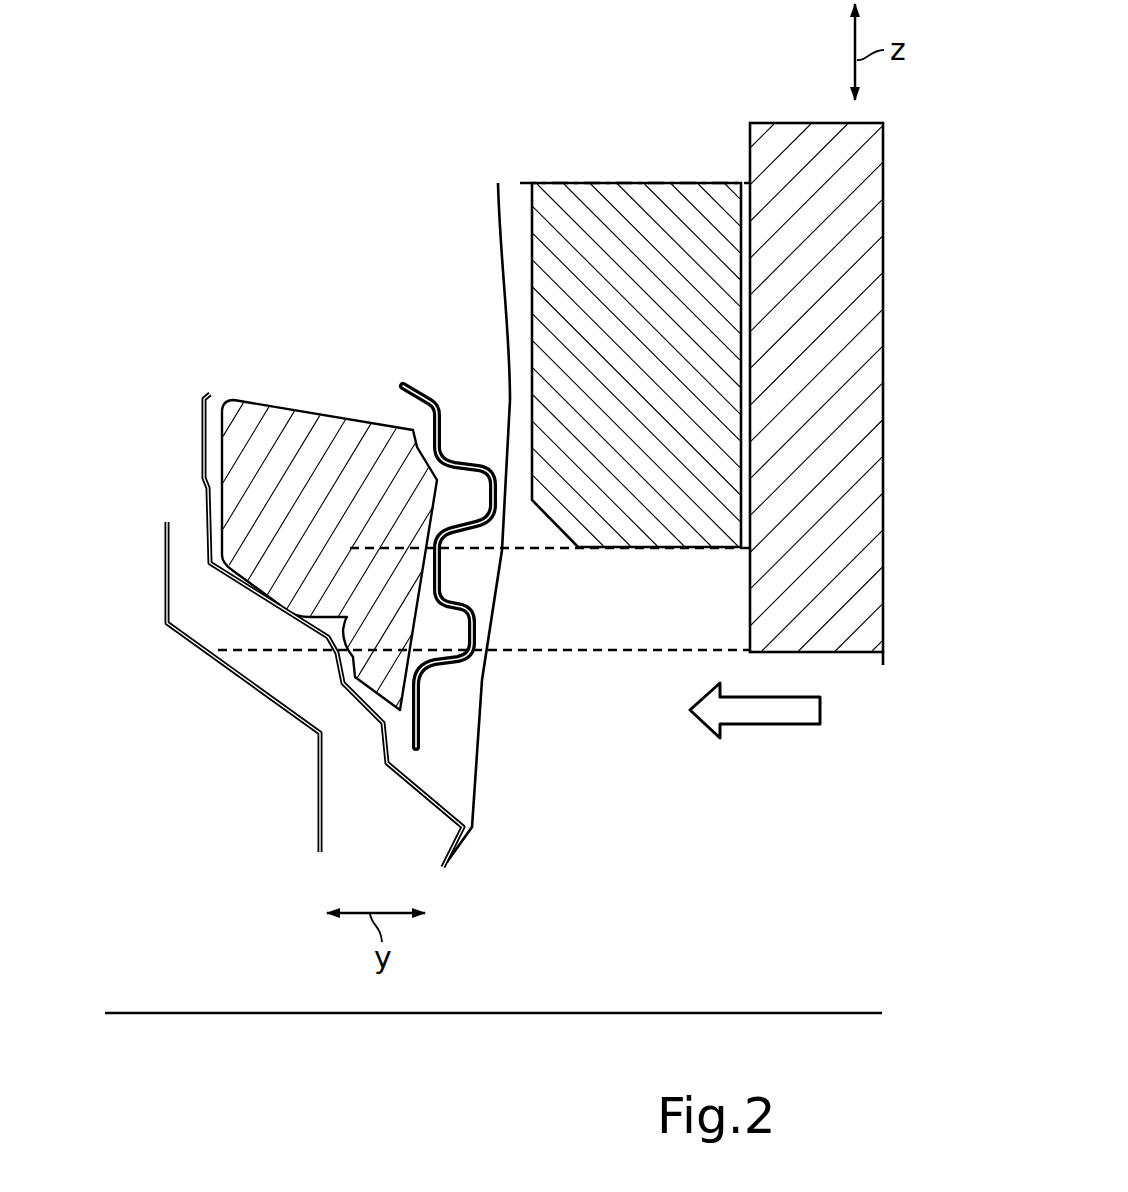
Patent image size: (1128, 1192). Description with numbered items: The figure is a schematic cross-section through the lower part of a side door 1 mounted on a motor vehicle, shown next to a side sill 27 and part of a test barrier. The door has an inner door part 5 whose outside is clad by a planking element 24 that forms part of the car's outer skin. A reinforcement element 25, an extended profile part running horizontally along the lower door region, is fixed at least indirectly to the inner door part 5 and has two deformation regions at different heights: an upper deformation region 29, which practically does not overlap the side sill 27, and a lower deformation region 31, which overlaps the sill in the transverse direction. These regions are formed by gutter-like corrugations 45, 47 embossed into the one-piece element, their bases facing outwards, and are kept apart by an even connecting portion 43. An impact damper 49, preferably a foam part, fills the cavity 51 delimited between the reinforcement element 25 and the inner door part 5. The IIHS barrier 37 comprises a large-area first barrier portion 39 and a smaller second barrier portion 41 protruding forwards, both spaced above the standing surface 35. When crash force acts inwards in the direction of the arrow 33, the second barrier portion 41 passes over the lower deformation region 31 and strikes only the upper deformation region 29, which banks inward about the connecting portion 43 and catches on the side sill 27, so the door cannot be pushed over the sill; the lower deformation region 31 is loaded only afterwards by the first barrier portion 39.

The side door 1 is at (478, 198).
The inner door part 5 is at (197, 427).
The planking element 24 is at (482, 743).
The reinforcement element 25 is at (437, 397).
The side sill 27 is at (230, 697).
The upper deformation region 29 is at (505, 488).
The lower deformation region 31 is at (484, 628).
The arrow 33 is at (765, 710).
The standing surface 35 is at (744, 1010).
The IIHS barrier 37 is at (810, 306).
The first barrier portion 39 is at (800, 162).
The second barrier portion 41 is at (628, 218).
The connecting portion 43 is at (446, 558).
The corrugation 45 is at (457, 498).
The corrugation 47 is at (447, 625).
The impact damper 49 is at (250, 488).
The cavity 51 is at (213, 458).